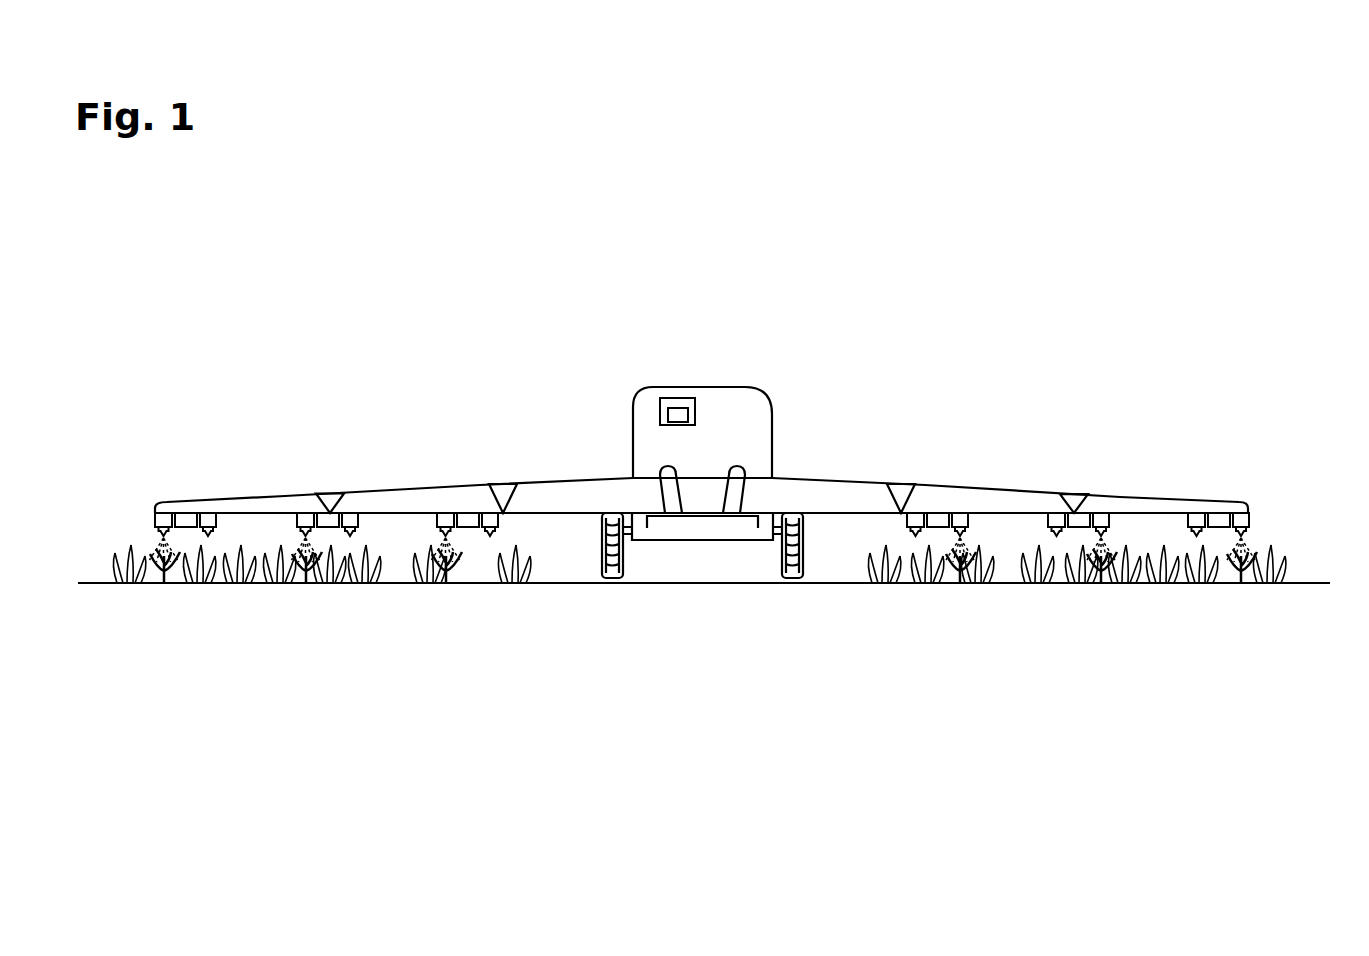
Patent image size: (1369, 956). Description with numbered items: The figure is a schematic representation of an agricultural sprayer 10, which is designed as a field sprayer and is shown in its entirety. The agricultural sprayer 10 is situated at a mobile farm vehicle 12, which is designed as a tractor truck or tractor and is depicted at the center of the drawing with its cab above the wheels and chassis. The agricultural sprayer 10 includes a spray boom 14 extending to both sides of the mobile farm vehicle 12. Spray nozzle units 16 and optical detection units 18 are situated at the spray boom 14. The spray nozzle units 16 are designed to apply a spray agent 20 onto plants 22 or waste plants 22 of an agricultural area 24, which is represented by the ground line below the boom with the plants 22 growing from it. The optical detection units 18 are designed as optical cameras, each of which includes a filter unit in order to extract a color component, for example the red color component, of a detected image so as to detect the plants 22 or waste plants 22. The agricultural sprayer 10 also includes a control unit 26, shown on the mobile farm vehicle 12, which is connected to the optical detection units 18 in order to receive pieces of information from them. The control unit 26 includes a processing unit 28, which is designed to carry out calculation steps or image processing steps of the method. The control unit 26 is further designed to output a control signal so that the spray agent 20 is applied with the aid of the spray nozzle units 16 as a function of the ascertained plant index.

The agricultural sprayer 10 is at (1172, 367).
The mobile farm vehicle 12 is at (717, 387).
The spray boom 14 is at (410, 490).
The spray nozzle unit 16 is at (1250, 530).
The optical detection unit 18 is at (1218, 520).
The spray agent 20 is at (1253, 545).
The plant 22 is at (1250, 583).
The agricultural area 24 is at (568, 583).
The control unit 26 is at (677, 425).
The processing unit 28 is at (668, 415).